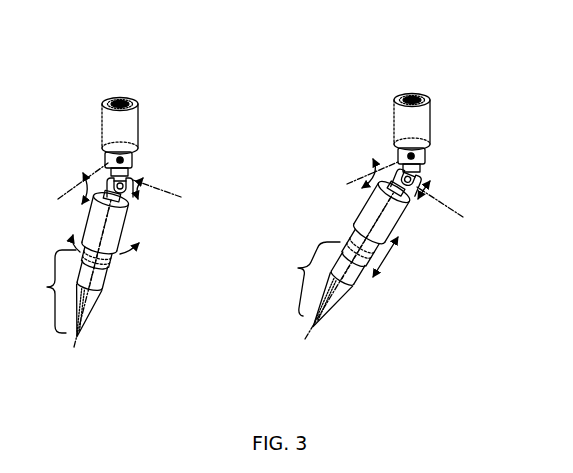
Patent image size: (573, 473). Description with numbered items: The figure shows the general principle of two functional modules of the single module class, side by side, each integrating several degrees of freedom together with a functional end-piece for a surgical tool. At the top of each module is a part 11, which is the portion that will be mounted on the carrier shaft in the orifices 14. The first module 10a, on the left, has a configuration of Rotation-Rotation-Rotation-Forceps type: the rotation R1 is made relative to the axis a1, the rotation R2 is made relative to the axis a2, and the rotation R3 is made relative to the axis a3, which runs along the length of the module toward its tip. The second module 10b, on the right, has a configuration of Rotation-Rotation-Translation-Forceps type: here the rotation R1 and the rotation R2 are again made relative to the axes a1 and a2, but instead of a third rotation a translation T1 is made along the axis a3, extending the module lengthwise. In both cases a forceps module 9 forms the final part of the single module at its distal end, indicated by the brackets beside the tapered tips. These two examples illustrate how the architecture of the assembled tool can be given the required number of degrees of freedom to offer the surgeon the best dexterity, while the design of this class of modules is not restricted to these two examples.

The orifices 14 is at (400, 98).
The parts 11 is at (390, 121).
The first module 10a is at (96, 300).
The second module 10b is at (361, 295).
The forceps module 9 is at (46, 287).
The rotation R1 is at (215, 174).
The rotation R2 is at (298, 182).
The rotation R3 is at (120, 244).
The translation T1 is at (391, 260).
The axis a1 is at (219, 189).
The axis a2 is at (308, 204).
The axis a3 is at (227, 280).